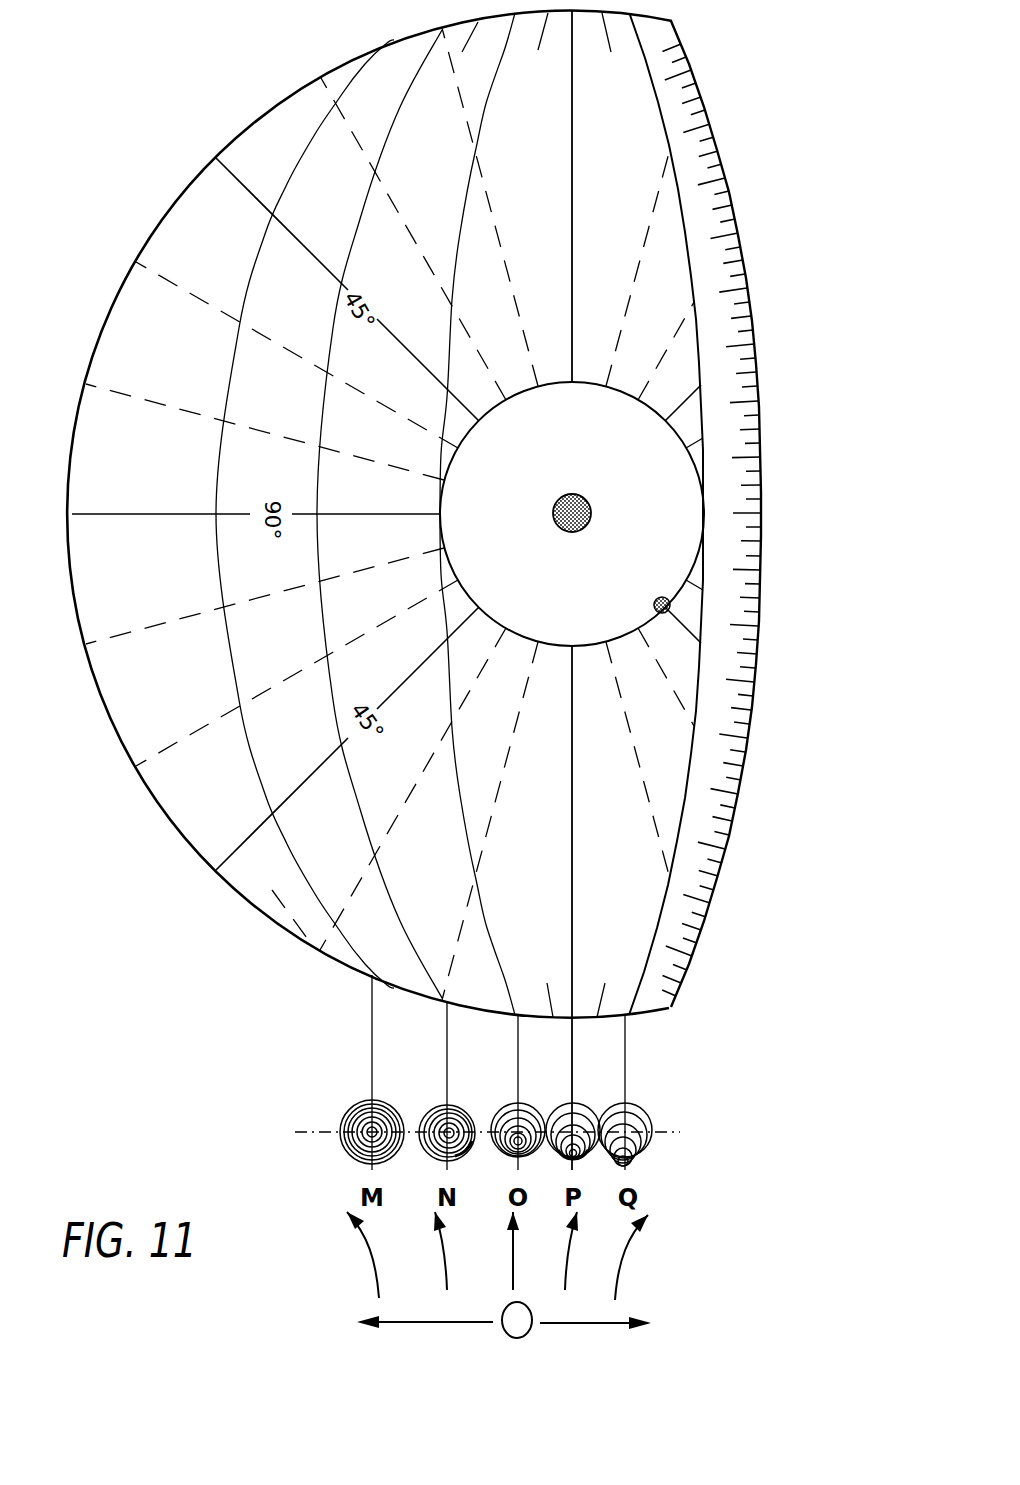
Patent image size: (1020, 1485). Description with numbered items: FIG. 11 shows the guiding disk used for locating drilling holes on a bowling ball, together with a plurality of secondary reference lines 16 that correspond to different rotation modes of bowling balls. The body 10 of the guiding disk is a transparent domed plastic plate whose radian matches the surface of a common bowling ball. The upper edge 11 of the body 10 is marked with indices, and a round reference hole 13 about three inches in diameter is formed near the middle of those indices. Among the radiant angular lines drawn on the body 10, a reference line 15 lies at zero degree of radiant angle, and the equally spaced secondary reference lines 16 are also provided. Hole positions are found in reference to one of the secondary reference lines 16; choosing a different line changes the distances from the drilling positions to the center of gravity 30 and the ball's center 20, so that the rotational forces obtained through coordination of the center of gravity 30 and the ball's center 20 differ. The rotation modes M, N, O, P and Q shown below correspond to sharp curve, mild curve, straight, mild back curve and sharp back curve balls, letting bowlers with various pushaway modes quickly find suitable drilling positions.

The body 10 is at (224, 877).
The upper edge 11 is at (741, 253).
The reference hole 13 is at (585, 628).
The reference line 15 is at (572, 132).
The secondary reference lines 16 is at (353, 233).
The ball's center 20 is at (595, 510).
The center of gravity 30 is at (660, 597).